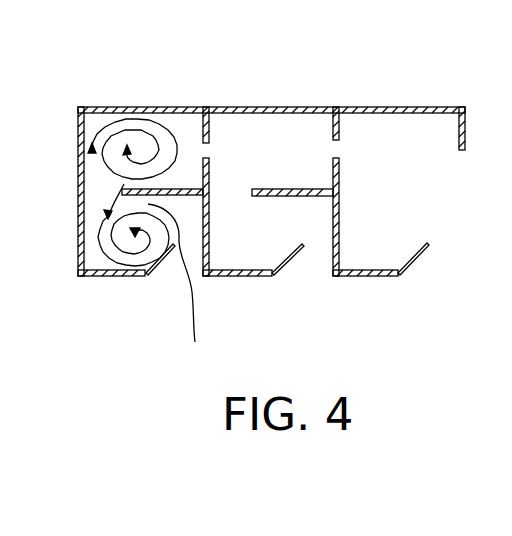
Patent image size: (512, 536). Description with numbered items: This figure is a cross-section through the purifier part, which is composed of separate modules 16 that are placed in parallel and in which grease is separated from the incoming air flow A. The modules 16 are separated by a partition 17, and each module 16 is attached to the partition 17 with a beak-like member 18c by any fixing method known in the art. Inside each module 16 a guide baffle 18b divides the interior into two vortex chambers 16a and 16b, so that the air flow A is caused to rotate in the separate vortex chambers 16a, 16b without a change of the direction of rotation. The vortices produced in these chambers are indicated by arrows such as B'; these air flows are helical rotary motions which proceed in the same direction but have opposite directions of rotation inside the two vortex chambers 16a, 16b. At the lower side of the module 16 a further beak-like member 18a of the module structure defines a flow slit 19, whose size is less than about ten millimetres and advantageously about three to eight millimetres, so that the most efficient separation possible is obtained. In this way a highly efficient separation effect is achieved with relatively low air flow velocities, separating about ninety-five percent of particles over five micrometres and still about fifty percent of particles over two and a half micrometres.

The module 16 is at (256, 170).
The vortex chamber 16a is at (264, 122).
The vortex chamber 16b is at (343, 235).
The partition 17 is at (212, 224).
The beak-like member 18a is at (160, 272).
The guide baffle 18b is at (122, 192).
The beak-like member 18c is at (201, 128).
The flow slit 19 is at (195, 266).
The air flow A is at (193, 337).
The air flow B' is at (108, 250).